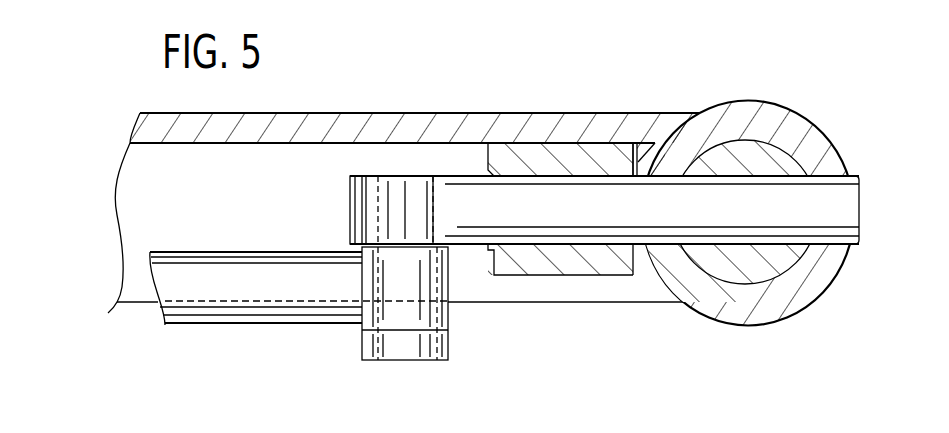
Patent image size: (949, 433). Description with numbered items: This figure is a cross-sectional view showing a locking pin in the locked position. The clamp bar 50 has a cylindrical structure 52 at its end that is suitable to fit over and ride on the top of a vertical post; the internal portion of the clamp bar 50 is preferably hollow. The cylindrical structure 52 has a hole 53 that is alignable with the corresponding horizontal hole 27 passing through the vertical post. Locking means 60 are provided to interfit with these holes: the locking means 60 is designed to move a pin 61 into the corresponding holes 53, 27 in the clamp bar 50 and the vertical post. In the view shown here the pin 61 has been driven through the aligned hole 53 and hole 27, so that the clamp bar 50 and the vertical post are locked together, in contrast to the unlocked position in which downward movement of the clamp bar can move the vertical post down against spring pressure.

The clamp bar 50 is at (507, 127).
The cylindrical structure 52 is at (833, 163).
The horizontal hole 27 is at (746, 134).
The hole 53 is at (645, 185).
The pin 61 is at (465, 190).
The locking means 60 is at (257, 252).